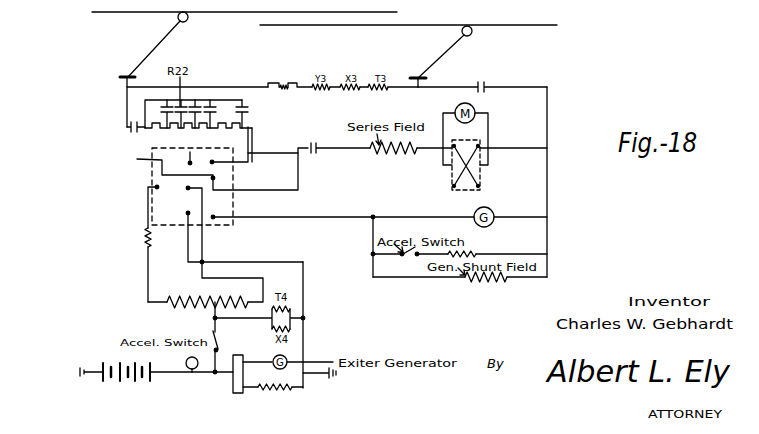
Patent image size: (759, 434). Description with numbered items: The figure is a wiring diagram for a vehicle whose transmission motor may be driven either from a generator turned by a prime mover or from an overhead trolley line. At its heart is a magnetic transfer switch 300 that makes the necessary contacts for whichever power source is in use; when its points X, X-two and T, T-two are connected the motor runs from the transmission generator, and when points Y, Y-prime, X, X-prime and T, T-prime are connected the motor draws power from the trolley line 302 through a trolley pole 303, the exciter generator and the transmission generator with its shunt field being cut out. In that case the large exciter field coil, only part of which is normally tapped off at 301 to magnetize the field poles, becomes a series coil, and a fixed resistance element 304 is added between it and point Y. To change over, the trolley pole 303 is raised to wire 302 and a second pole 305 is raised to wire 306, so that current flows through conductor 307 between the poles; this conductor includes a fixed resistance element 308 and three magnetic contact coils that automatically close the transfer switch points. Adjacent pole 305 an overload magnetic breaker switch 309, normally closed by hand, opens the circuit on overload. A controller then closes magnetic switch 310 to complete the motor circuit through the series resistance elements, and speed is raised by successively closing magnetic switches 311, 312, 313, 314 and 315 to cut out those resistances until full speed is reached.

The magnetic transfer switch 300 is at (172, 213).
The tapped-off portion of exciter field coil 301 is at (215, 305).
The trolley line 302 is at (218, 13).
The trolley pole 303 is at (154, 48).
The fixed resistance element 304 is at (148, 245).
The pole 305 is at (442, 55).
The wire 306 is at (330, 26).
The conductor 307 is at (220, 86).
The fixed resistance element 308 is at (288, 86).
The overload magnetic breaker switch 309 is at (483, 84).
The magnetic switch 310 is at (128, 127).
The magnetic switch 311 is at (163, 108).
The magnetic switch 312 is at (167, 128).
The magnetic switch 313 is at (187, 113).
The magnetic switch 314 is at (214, 112).
The magnetic switch 315 is at (248, 110).